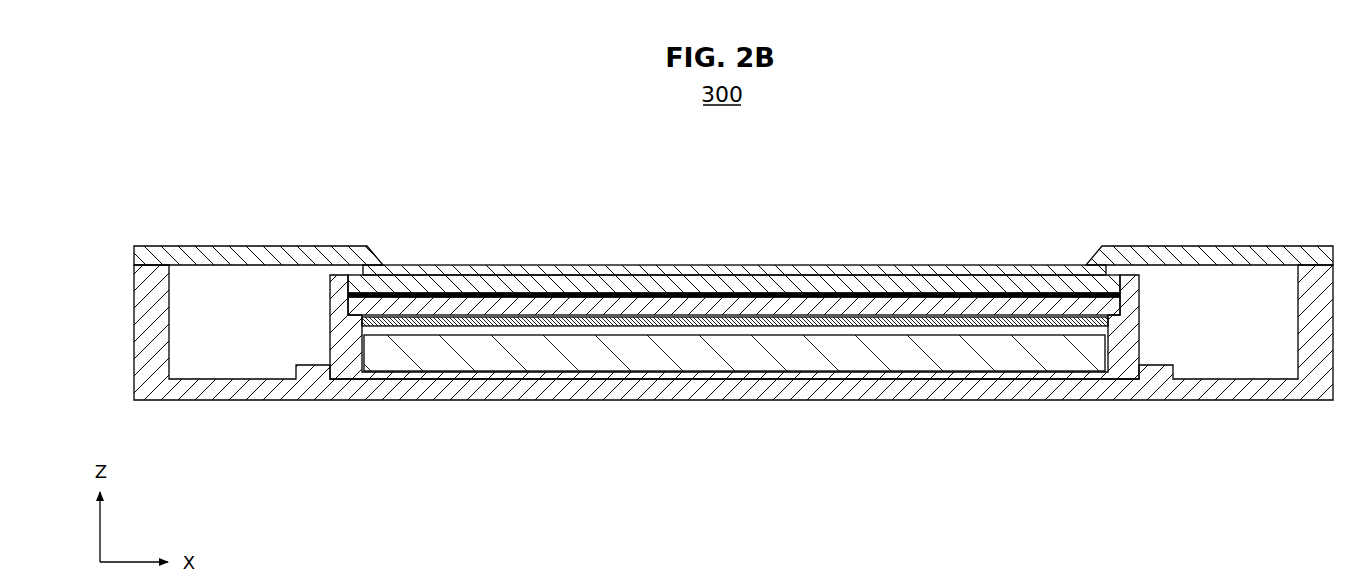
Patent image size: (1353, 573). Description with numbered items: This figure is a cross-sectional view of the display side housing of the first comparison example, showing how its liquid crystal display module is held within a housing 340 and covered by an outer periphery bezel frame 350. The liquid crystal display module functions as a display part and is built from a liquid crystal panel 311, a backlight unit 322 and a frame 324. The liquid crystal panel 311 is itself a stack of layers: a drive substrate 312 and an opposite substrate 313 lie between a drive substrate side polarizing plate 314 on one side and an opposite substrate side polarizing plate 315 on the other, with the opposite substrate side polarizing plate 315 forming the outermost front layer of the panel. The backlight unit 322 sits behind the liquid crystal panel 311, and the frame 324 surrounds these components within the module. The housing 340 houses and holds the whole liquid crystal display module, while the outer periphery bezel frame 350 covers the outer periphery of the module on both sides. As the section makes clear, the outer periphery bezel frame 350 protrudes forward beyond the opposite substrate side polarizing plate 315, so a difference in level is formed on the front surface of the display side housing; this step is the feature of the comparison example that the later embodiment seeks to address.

The liquid crystal panel 311 is at (748, 262).
The drive substrate 312 is at (1003, 307).
The opposite substrate 313 is at (917, 294).
The drive substrate side polarizing plate 314 is at (1002, 320).
The opposite substrate side polarizing plate 315 is at (834, 272).
The backlight unit 322 is at (904, 360).
The frame 324 is at (345, 368).
The housing 340 is at (1240, 400).
The outer periphery bezel frame 350 is at (276, 250).